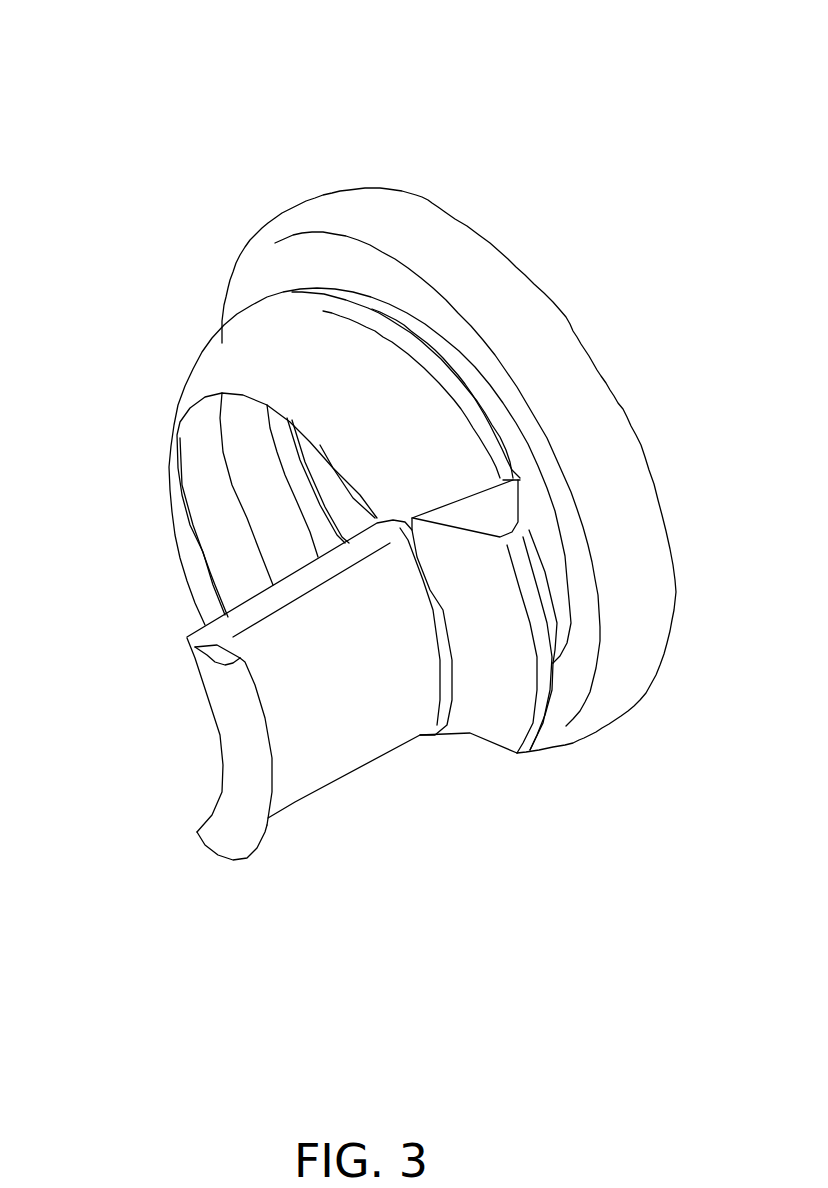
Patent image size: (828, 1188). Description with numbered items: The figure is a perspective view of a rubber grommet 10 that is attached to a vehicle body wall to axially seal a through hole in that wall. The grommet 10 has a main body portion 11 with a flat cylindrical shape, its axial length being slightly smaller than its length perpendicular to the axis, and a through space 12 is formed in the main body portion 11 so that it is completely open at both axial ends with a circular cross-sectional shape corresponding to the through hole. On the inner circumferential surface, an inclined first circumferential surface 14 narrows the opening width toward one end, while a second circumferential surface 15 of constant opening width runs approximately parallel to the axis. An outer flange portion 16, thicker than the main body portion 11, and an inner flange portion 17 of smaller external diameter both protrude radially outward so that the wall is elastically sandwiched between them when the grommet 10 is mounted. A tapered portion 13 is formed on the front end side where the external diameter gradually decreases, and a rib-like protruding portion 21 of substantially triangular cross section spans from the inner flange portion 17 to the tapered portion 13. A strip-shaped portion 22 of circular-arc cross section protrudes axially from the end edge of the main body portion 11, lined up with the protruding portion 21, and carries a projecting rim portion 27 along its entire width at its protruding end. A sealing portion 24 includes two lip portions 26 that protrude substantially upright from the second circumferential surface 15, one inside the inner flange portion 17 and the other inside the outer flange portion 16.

The grommet 10 is at (417, 384).
The main body portion 11 is at (370, 407).
The through space 12 is at (153, 476).
The tapered portion 13 is at (392, 795).
The first circumferential surface 14 is at (153, 527).
The second circumferential surface 15 is at (238, 528).
The outer flange portion 16 is at (449, 470).
The inner flange portion 17 is at (424, 438).
The protruding portion 21 is at (567, 760).
The strip-shaped portion 22 is at (353, 699).
The sealing portion 24 is at (437, 471).
The lip portion 26 is at (252, 462).
The projecting rim portion 27 is at (232, 899).